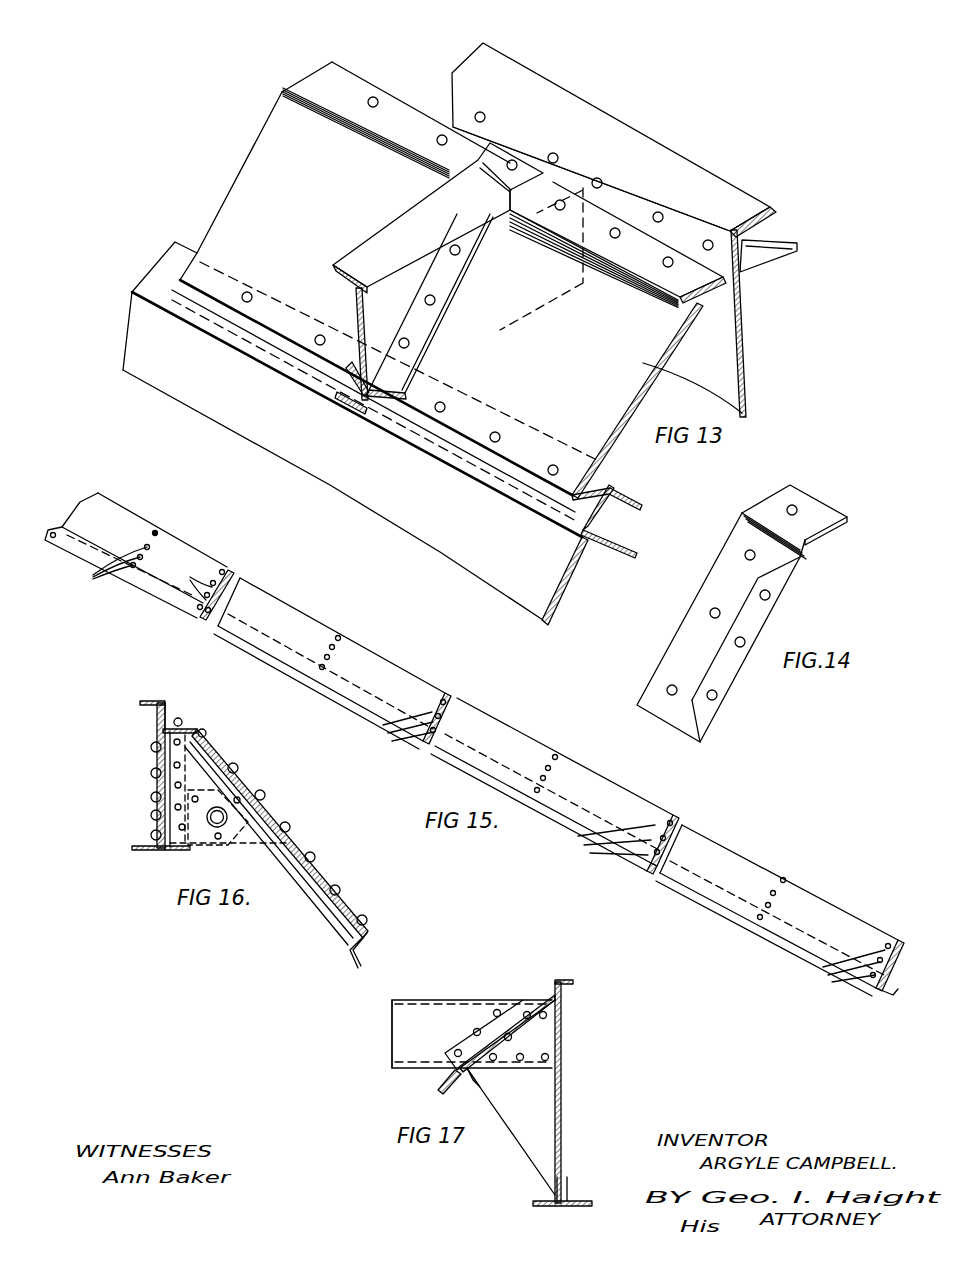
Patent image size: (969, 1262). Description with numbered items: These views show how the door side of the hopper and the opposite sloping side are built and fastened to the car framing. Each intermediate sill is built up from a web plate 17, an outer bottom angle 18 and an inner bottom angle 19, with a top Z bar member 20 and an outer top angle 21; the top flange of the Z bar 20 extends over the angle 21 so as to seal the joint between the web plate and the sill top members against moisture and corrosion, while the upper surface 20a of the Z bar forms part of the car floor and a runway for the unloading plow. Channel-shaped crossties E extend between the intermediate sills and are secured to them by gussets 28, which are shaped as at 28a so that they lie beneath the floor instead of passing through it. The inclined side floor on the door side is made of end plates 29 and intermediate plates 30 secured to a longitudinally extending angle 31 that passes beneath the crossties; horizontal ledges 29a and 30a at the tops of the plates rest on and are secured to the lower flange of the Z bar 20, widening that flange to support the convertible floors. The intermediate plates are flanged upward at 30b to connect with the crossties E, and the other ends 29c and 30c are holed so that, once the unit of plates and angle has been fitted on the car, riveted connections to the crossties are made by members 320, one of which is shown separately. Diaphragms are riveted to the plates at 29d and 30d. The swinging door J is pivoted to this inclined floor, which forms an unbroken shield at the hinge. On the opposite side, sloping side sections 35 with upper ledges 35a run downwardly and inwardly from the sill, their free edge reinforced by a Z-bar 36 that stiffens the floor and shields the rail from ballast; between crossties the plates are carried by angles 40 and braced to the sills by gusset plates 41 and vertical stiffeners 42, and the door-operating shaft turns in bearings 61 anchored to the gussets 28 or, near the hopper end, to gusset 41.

In FIG. 13, the web plate 17 is at (746, 338).
In FIG. 16, the web plate 17 is at (157, 768).
In FIG. 16, the outer bottom angle 18 is at (145, 852).
In FIG. 16, the inner bottom angle 19 is at (170, 851).
In FIG. 13, the top Z bar member 20 is at (737, 283).
In FIG. 16, the top Z bar member 20 is at (165, 714).
In FIG. 17, the top Z bar member 20 is at (568, 983).
In FIG. 13, the upper surface of Z bar 20a is at (713, 192).
In FIG. 16, the upper surface of Z bar 20a is at (150, 677).
In FIG. 13, the outer top angle 21 is at (763, 243).
In FIG. 17, the gusset 28 is at (513, 1120).
In FIG. 17, the shaped portion of gusset 28a is at (495, 1040).
In FIG. 15, the end plate 29 is at (165, 567).
In FIG. 15, the horizontal ledge 29a is at (205, 563).
In FIG. 15, the holed end of end plate 29c is at (205, 577).
In FIG. 15, the diaphragm attachment point 29d is at (155, 533).
In FIG. 13, the intermediate plate 30 is at (597, 385).
In FIG. 15, the intermediate plate 30 is at (347, 663).
In FIG. 17, the intermediate plate 30 is at (487, 1022).
In FIG. 13, the horizontal ledge 30a is at (675, 290).
In FIG. 15, the horizontal ledge 30a is at (303, 618).
In FIG. 17, the horizontal ledge 30a is at (528, 1000).
In FIG. 13, the upward flange 30b is at (358, 352).
In FIG. 15, the upward flange 30b is at (205, 623).
In FIG. 17, the upward flange 30b is at (488, 1020).
In FIG. 15, the holed end of intermediate plate 30c is at (395, 733).
In FIG. 15, the diaphragm attachment point 30d is at (338, 638).
In FIG. 13, the longitudinally extending angle 31 is at (583, 493).
In FIG. 15, the longitudinally extending angle 31 is at (647, 867).
In FIG. 17, the longitudinally extending angle 31 is at (438, 1083).
In FIG. 16, the sloping side section 35 is at (300, 836).
In FIG. 16, the ledge 35a is at (185, 731).
In FIG. 16, the Z-bar 36 is at (370, 932).
In FIG. 16, the angle 40 is at (305, 872).
In FIG. 16, the gusset plate 41 is at (246, 845).
In FIG. 16, the vertical stiffener 42 is at (198, 846).
In FIG. 16, the bearing 61 is at (200, 785).
In FIG. 13, the connecting member 320 is at (507, 167).
In FIG. 14, the connecting member 320 is at (768, 508).
In FIG. 13, the crosstie E is at (373, 387).
In FIG. 17, the crosstie E is at (430, 1015).
In FIG. 13, the swinging door J is at (547, 563).